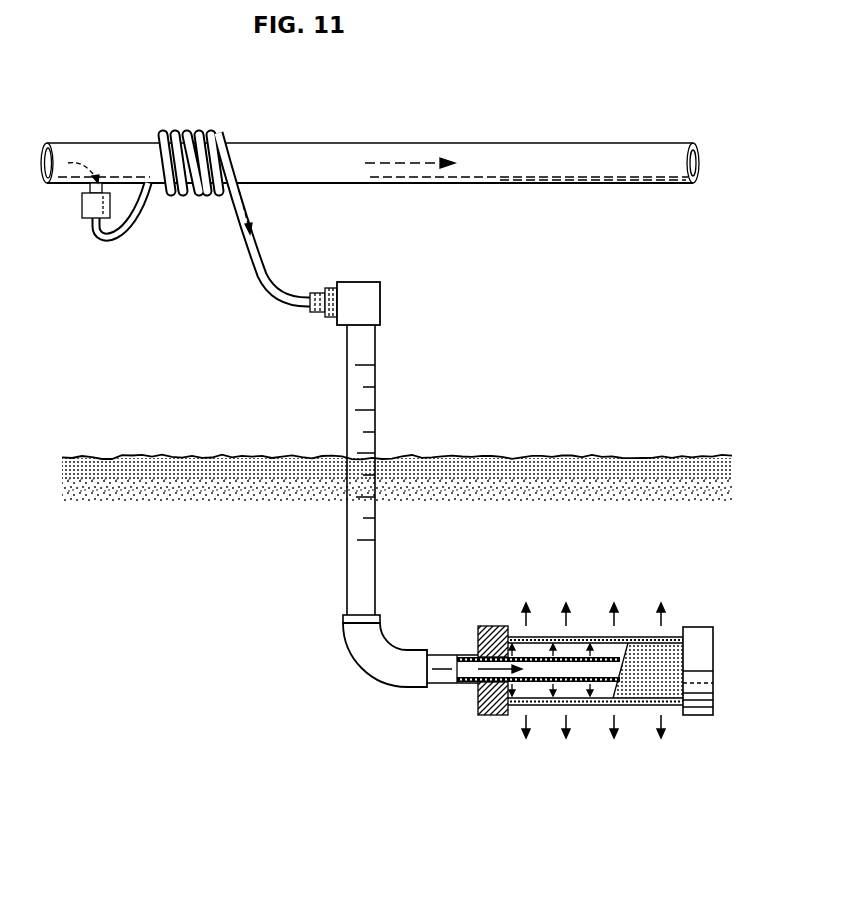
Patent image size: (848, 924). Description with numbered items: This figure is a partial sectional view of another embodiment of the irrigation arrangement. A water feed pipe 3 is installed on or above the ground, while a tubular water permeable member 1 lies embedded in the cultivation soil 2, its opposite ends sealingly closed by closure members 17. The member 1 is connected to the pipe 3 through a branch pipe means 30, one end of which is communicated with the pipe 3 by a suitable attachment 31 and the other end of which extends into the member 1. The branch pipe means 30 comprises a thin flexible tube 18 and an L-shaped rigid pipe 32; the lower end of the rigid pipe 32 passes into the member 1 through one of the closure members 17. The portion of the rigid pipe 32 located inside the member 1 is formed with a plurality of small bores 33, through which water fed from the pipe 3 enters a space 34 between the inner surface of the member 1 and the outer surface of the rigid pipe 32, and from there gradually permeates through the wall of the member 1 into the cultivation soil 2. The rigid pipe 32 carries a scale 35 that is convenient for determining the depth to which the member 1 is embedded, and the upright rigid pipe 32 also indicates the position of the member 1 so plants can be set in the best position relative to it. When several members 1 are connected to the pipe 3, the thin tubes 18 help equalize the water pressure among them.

The water permeable member 1 is at (645, 706).
The cultivation soil 2 is at (610, 462).
The water feed pipe 3 is at (385, 140).
The closure member 17 is at (480, 703).
The thin flexible tube 18 is at (261, 255).
The branch pipe means 30 is at (380, 342).
The attachment 31 is at (84, 207).
The L-shaped rigid pipe 32 is at (347, 387).
The small bores 33 is at (560, 688).
The space 34 is at (578, 650).
The scale 35 is at (360, 410).